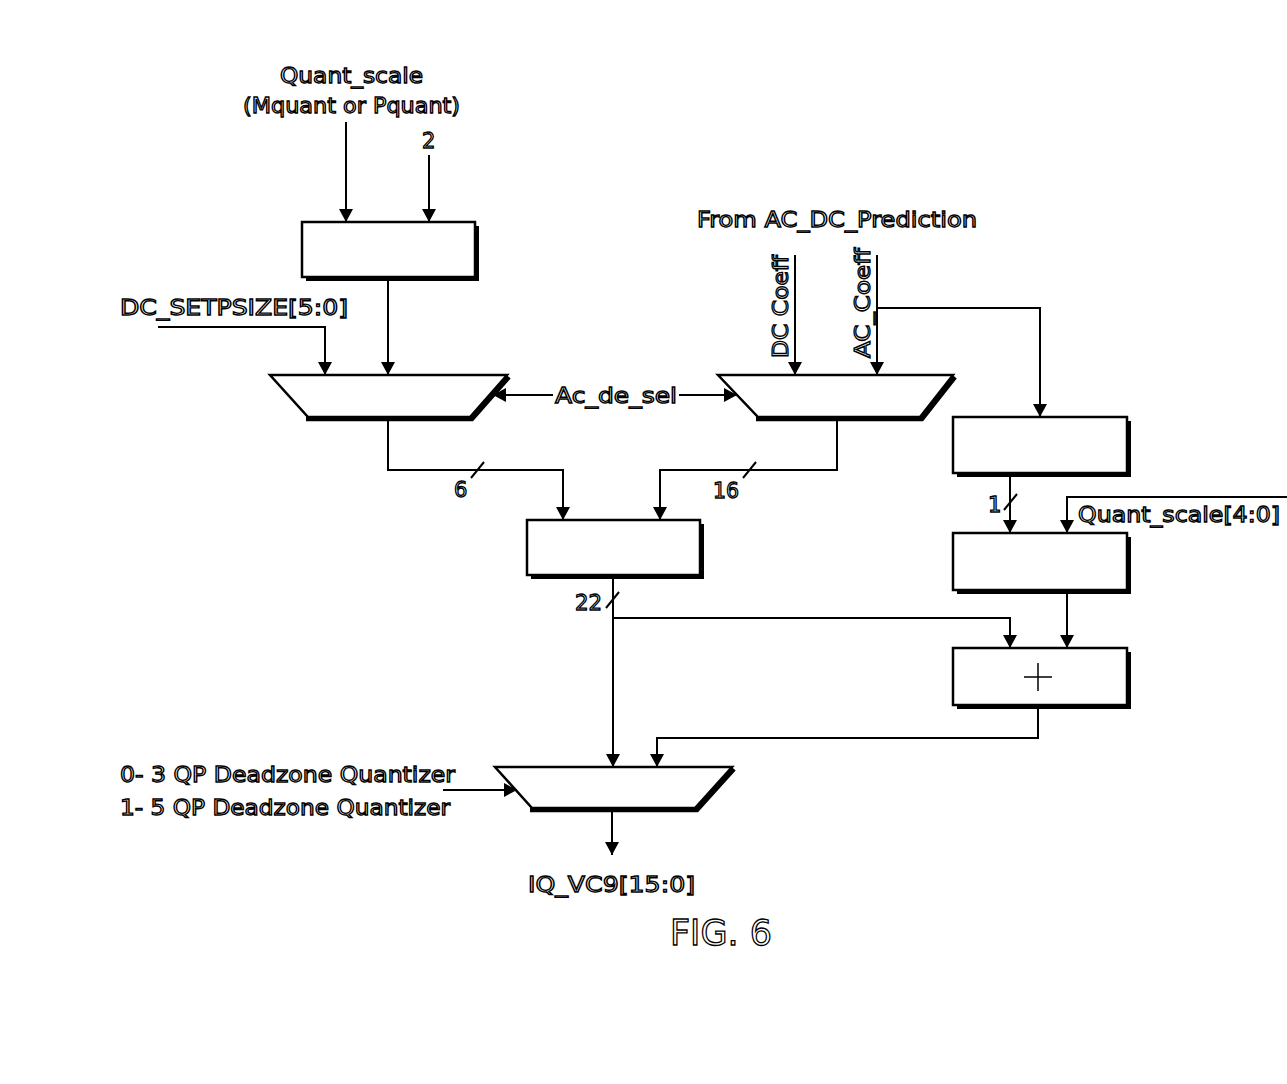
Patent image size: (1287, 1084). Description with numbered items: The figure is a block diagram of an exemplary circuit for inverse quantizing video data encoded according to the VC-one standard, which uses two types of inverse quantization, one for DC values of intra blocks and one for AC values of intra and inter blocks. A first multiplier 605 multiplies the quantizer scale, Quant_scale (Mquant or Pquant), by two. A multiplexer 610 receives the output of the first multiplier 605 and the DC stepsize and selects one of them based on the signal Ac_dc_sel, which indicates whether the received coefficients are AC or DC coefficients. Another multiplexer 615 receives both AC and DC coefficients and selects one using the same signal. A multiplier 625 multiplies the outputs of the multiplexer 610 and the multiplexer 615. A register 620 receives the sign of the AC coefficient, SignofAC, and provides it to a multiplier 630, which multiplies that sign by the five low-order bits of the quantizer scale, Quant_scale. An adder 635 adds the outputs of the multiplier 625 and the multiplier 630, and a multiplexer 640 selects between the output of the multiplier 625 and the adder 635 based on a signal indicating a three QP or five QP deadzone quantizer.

The first multiplier 605 is at (475, 246).
The multiplexer 610 is at (425, 375).
The multiplexer 615 is at (905, 375).
The register 620 is at (1127, 443).
The multiplier 625 is at (700, 546).
The multiplier 630 is at (1127, 558).
The adder 635 is at (1127, 675).
The multiplexer 640 is at (555, 767).